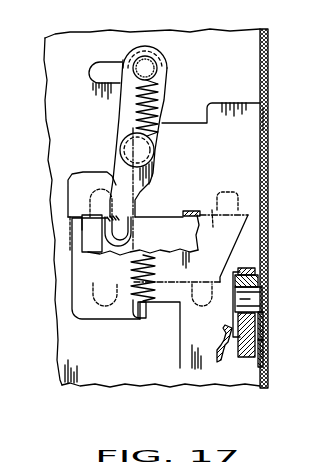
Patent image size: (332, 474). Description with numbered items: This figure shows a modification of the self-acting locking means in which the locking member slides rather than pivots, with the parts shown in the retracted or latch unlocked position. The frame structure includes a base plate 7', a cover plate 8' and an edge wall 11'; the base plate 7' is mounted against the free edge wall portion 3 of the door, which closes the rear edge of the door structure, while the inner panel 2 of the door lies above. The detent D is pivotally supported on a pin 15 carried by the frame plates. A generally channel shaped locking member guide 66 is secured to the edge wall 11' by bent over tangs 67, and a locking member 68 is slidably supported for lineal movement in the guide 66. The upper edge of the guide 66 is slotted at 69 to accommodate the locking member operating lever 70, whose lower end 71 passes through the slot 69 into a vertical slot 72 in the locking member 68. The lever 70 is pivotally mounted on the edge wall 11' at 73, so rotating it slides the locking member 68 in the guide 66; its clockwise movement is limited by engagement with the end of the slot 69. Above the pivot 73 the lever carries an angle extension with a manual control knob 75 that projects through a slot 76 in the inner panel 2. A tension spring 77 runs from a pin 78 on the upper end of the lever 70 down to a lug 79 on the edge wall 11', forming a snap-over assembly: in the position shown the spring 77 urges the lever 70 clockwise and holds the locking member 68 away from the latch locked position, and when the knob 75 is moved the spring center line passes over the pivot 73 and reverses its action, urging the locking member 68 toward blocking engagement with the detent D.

The inner panel 2 is at (216, 42).
The free edge wall portion 3 is at (268, 65).
The base plate 7' is at (281, 120).
The cover plate 8' is at (217, 343).
The edge wall 11' is at (211, 116).
The pin 15 is at (262, 299).
The detent D is at (264, 349).
The locking member guide 66 is at (83, 243).
The bent over tangs 67 is at (228, 190).
The locking member 68 is at (176, 205).
The slot 69 is at (186, 212).
The locking member operating lever 70 is at (118, 187).
The lower end of lever 71 is at (82, 230).
The vertical slot 72 is at (154, 258).
The pivot 73 is at (152, 155).
The manual control knob 75 is at (116, 58).
The slot 76 is at (98, 70).
The tension spring 77 is at (166, 98).
The pin 78 is at (151, 58).
The lug 79 is at (148, 313).